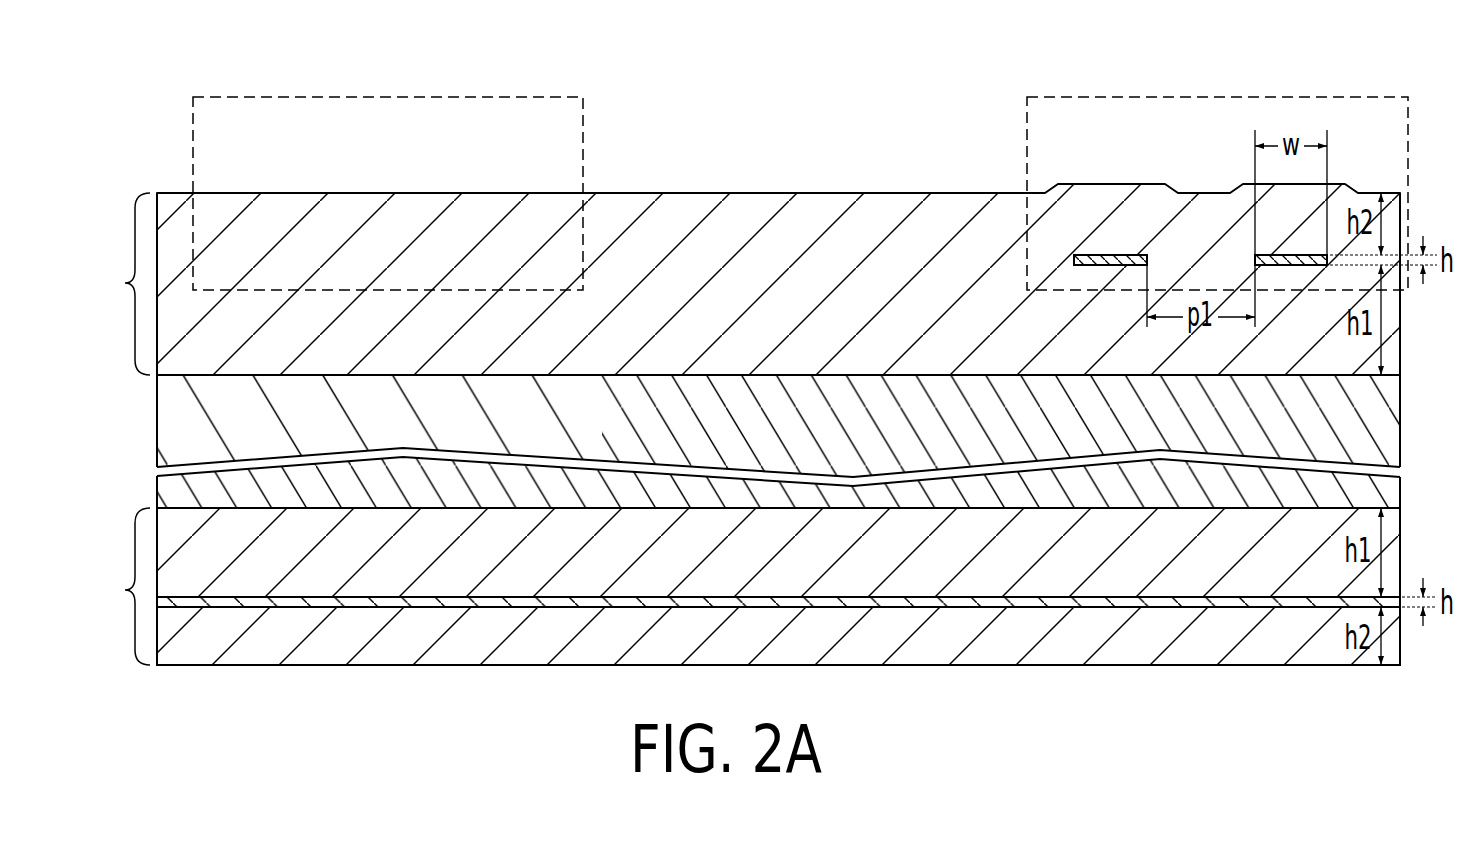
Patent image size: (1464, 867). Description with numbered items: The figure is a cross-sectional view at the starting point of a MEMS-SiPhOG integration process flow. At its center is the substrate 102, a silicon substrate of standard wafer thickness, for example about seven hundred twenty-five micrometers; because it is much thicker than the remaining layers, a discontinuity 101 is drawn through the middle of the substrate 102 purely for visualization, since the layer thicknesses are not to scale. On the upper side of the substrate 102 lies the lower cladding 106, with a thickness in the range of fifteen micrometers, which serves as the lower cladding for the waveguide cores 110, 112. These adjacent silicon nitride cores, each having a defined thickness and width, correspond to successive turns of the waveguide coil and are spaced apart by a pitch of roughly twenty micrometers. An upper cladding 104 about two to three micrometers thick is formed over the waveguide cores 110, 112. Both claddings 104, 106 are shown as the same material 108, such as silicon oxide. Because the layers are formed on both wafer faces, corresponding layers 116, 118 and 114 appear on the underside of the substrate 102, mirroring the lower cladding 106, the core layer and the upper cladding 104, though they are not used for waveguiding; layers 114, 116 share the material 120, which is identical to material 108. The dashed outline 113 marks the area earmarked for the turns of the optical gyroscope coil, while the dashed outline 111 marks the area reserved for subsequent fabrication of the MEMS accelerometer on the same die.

The discontinuity 101 is at (1063, 455).
The substrate 102 is at (1393, 432).
The upper cladding 104 is at (1393, 208).
The lower cladding 106 is at (1395, 362).
The material 108 is at (114, 284).
The waveguide core 110 is at (1107, 255).
The dashed outline 111 is at (243, 97).
The waveguide core 112 is at (1253, 257).
The dashed outline 113 is at (1078, 97).
The layer 114 is at (1393, 640).
The layer 116 is at (1393, 550).
The layer 118 is at (1282, 600).
The material 120 is at (115, 586).